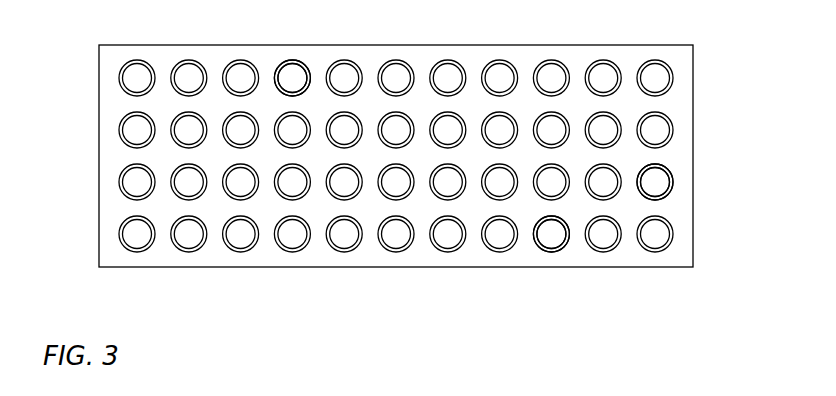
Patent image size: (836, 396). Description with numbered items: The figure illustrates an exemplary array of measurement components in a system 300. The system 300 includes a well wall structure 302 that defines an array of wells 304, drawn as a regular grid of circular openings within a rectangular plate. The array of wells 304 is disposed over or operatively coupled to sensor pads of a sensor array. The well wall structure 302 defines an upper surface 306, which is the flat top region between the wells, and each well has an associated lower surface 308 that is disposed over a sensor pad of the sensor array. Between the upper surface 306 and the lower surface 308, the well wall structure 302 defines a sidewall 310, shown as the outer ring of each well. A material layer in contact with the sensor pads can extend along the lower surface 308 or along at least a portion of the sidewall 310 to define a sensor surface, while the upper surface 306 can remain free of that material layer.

The system 300 is at (693, 103).
The well wall structure 302 is at (673, 153).
The array of wells 304 is at (675, 183).
The upper surface 306 is at (113, 100).
The lower surface 308 is at (288, 74).
The sidewall 310 is at (297, 62).